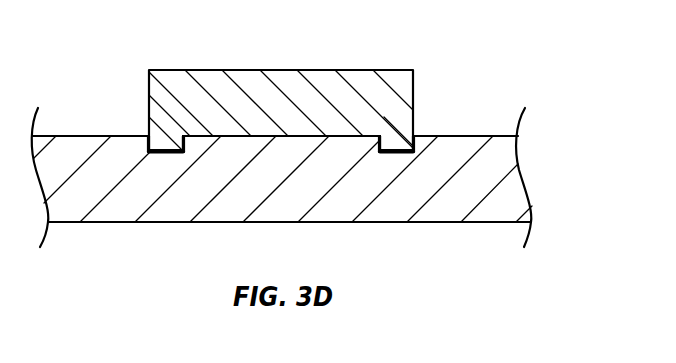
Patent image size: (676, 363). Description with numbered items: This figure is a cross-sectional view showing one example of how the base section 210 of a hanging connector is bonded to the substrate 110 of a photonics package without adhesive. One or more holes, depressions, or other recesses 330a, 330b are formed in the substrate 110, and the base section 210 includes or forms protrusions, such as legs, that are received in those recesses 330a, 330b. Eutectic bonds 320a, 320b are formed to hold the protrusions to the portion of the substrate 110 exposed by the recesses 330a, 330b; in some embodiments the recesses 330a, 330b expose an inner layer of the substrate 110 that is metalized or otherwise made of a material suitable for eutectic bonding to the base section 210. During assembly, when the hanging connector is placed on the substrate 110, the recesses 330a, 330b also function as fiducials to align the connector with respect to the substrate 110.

The substrate 110 is at (524, 170).
The base section 210 is at (247, 68).
The eutectic bond 320a is at (163, 148).
The eutectic bond 320b is at (402, 148).
The recess 330a is at (149, 143).
The recess 330b is at (413, 142).